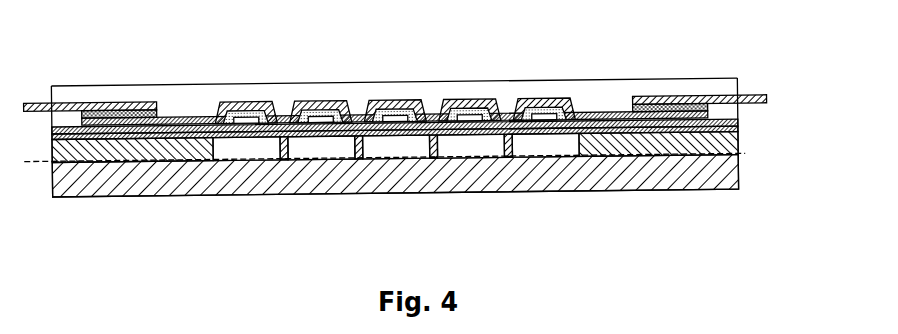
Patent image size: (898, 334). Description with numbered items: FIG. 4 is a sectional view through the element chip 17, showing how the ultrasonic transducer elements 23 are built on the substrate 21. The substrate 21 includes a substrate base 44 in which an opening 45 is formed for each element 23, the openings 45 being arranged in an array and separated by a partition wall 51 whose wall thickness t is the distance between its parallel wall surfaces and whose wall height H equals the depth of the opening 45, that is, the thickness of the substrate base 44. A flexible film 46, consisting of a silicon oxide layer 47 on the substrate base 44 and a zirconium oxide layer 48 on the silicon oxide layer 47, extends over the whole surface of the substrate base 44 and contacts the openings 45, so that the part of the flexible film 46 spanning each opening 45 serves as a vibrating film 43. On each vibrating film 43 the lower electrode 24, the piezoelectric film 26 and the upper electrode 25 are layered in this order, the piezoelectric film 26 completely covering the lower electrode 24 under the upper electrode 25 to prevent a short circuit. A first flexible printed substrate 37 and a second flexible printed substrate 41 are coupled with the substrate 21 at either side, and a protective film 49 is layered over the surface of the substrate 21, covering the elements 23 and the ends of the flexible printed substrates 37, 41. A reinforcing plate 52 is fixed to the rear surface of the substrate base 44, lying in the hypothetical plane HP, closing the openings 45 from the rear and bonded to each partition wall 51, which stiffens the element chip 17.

The element chip 17 is at (734, 56).
The substrate 21 is at (748, 158).
The ultrasonic transducer element 23 is at (250, 91).
The lower electrode 24 is at (410, 116).
The upper electrode 25 is at (379, 112).
The piezoelectric film 26 is at (404, 101).
The first flexible printed substrate 37 is at (120, 102).
The second flexible printed substrate 41 is at (661, 102).
The vibrating film 43 is at (382, 137).
The substrate base 44 is at (749, 153).
The opening 45 is at (440, 159).
The flexible film 46 is at (447, 124).
The silicon oxide layer 47 is at (740, 128).
The zirconium oxide layer 48 is at (740, 119).
The protective film 49 is at (697, 78).
The partition wall 51 is at (428, 158).
The reinforcing plate 52 is at (708, 184).